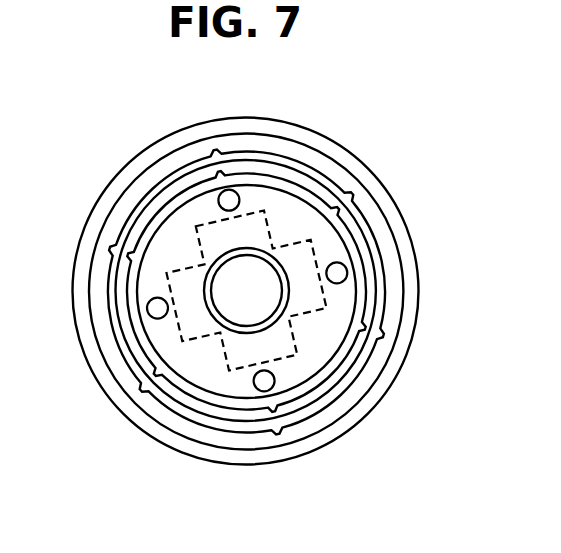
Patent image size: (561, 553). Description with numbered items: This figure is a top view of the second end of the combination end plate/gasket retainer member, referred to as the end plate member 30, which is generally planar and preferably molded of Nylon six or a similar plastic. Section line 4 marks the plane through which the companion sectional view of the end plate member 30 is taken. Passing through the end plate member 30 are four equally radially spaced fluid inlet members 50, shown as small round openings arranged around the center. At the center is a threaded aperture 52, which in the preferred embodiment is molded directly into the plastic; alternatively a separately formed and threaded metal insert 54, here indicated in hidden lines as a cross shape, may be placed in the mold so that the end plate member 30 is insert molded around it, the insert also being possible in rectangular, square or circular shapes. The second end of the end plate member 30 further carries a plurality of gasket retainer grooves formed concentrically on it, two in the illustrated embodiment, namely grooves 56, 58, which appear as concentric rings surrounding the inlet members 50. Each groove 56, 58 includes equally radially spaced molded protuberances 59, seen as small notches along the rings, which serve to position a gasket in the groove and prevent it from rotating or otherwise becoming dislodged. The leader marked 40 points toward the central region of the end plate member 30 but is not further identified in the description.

The end plate member 30 is at (70, 166).
The section line 4- 4 is at (214, 144).
The hub member 40 is at (292, 220).
The fluid inlet members 50 is at (155, 298).
The central threaded aperture 52 is at (215, 307).
The metal insert 54 is at (322, 245).
The gasket retainer groove 56 is at (340, 375).
The gasket retainer groove 58 is at (387, 248).
The molded protuberances 59 is at (223, 174).